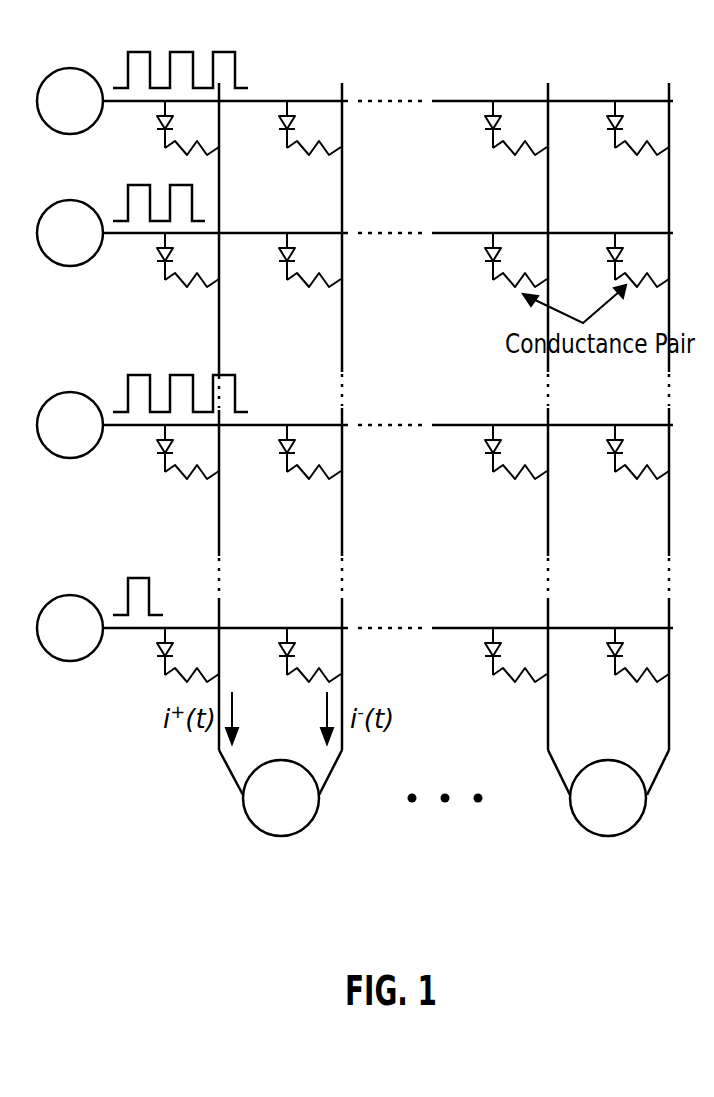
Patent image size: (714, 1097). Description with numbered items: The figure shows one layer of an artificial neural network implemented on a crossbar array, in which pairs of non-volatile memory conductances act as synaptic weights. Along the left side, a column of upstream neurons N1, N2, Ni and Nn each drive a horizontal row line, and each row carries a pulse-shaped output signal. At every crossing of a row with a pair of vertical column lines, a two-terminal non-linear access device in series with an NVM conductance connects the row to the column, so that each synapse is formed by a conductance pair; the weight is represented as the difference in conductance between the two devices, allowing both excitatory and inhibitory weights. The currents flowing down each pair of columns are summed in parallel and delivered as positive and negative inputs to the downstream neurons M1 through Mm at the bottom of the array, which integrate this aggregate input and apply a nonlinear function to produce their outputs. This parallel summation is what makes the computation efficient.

The upstream neuron N1 is at (70, 101).
The upstream neuron N2 is at (70, 233).
The upstream neuron Ni is at (70, 425).
The upstream neuron Nn is at (70, 628).
The downstream neuron M1 is at (281, 798).
The downstream neuron Mm is at (608, 798).